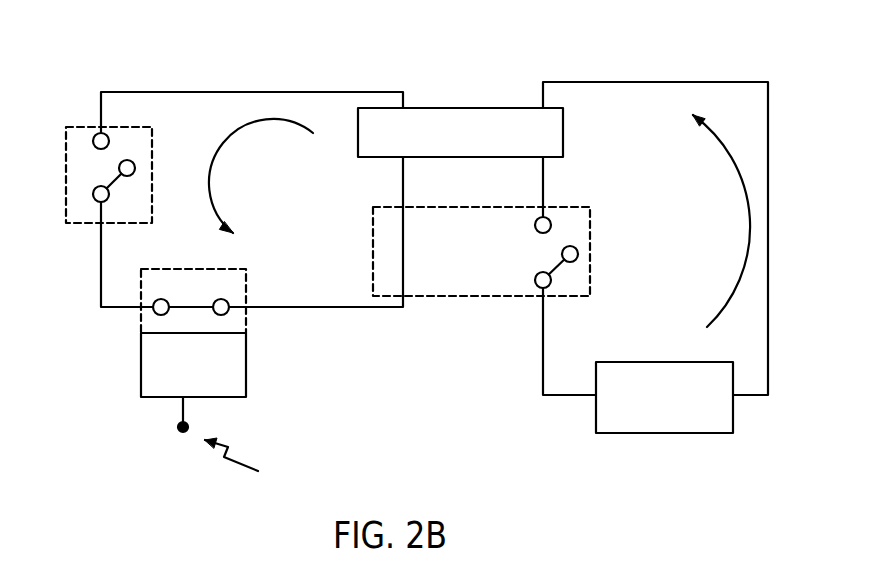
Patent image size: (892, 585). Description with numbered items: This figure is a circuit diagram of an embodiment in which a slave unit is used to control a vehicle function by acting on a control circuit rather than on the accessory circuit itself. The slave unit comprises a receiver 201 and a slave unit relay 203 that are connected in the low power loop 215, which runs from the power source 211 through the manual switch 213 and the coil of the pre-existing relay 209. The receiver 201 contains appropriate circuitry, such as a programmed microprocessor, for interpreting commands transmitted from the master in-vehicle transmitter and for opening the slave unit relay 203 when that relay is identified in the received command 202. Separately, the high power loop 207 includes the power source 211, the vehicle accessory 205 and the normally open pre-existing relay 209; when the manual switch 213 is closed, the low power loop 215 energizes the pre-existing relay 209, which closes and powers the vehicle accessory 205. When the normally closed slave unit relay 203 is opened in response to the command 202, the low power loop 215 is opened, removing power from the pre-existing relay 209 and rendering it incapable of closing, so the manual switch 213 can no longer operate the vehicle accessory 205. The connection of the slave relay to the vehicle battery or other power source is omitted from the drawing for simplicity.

The receiver 201 is at (141, 370).
The command 202 is at (242, 462).
The slave unit relay 203 is at (139, 319).
The vehicle accessory 205 is at (612, 433).
The high power loop 207 is at (750, 203).
The pre-existing relay 209 is at (475, 296).
The power source 211 is at (460, 108).
The manual switch 213 is at (139, 223).
The low power loop 215 is at (261, 113).